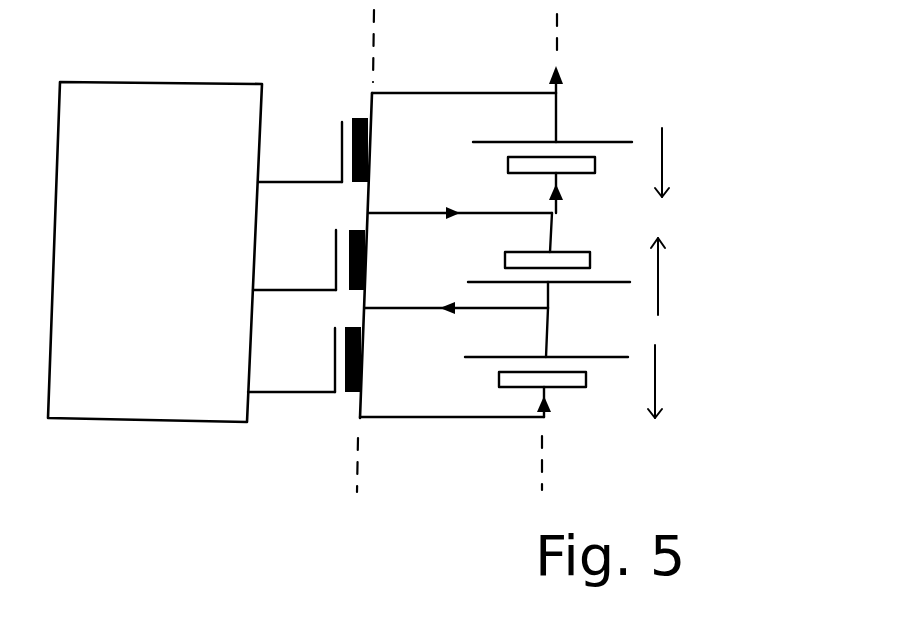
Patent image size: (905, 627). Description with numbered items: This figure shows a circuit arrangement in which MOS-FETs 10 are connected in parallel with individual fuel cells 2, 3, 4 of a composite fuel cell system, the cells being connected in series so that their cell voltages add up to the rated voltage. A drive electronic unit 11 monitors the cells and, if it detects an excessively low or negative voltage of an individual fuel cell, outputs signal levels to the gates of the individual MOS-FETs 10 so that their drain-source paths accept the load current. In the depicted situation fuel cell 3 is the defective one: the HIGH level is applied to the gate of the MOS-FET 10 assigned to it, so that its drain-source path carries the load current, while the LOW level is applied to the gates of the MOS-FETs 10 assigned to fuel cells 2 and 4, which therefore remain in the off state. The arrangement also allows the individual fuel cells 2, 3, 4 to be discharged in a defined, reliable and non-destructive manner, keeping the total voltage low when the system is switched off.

The individual fuel cell 2 is at (620, 156).
The individual fuel cell 3 is at (612, 270).
The individual fuel cell 4 is at (620, 373).
The MOS-FET 10 is at (327, 358).
The drive electronic unit 11 is at (166, 256).